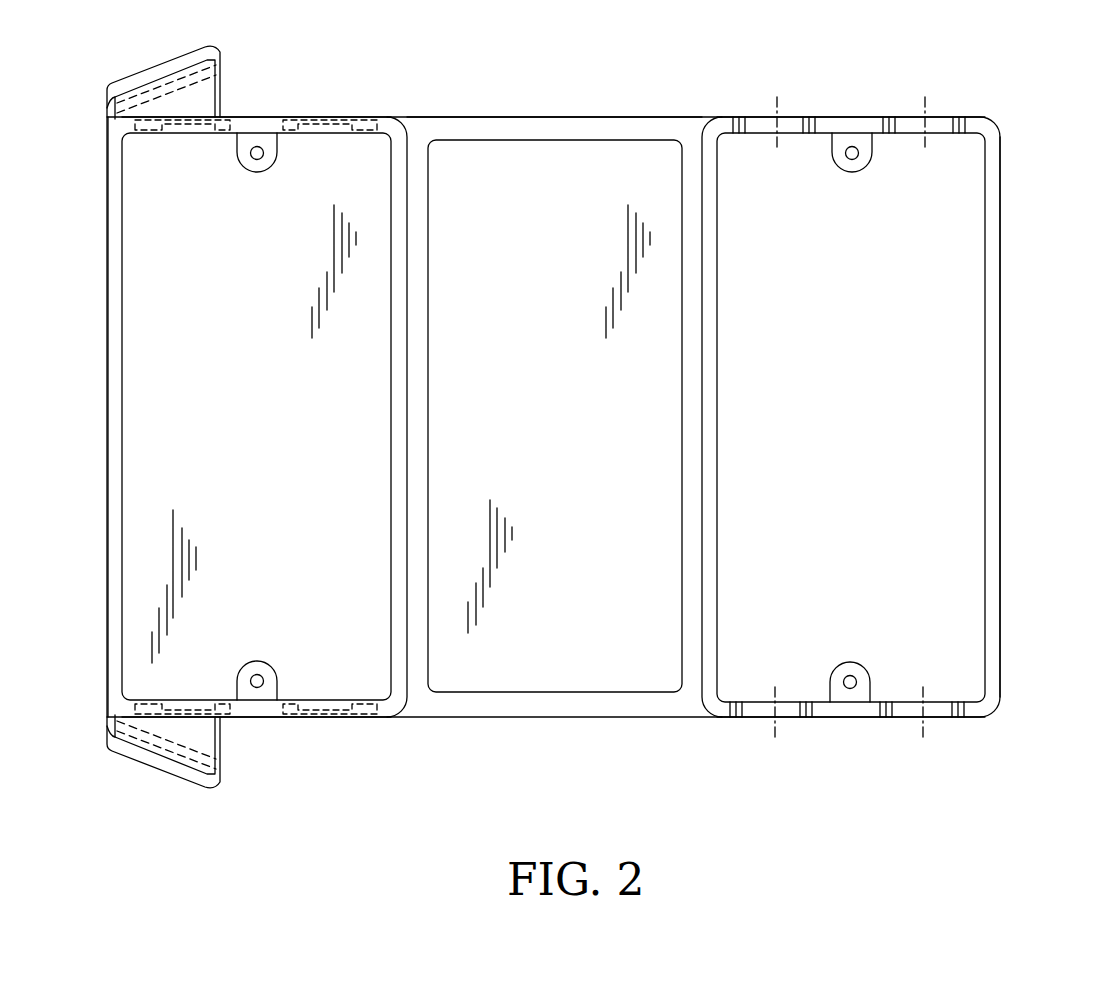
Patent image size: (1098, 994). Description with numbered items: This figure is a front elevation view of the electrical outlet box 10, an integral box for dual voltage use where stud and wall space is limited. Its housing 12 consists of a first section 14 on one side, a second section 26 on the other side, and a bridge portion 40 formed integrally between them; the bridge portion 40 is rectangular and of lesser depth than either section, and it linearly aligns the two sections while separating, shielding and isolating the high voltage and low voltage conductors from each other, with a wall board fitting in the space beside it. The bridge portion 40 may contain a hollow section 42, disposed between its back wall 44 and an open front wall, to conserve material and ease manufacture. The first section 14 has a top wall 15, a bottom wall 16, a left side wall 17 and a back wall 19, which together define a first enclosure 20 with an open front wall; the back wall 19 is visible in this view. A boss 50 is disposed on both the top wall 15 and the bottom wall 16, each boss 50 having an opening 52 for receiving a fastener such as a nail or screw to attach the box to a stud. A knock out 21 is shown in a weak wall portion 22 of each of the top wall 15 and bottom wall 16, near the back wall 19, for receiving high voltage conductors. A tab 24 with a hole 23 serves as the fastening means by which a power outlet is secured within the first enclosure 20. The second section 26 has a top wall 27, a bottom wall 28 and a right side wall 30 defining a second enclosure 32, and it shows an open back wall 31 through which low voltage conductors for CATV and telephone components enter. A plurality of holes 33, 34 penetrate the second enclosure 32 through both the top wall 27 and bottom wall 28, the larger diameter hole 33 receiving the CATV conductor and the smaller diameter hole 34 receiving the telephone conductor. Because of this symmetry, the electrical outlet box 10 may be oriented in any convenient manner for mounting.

The electrical outlet box 10 is at (538, 80).
The housing 12 is at (625, 108).
The first section 14 is at (107, 238).
The top wall 15 is at (283, 117).
The bottom wall 16 is at (283, 717).
The left side wall 17 is at (107, 440).
The back wall 19 is at (174, 343).
The first enclosure 20 is at (155, 513).
The knock out 21 is at (197, 122).
The weak wall portion 22 is at (362, 125).
The hole 23 is at (254, 158).
The tab 24 is at (268, 165).
The second section 26 is at (1000, 468).
The top wall 27 is at (855, 112).
The bottom wall 28 is at (858, 720).
The right side wall 30 is at (1000, 387).
The open back wall 31 is at (940, 262).
The second enclosure 32 is at (915, 356).
The larger diameter hole 33 is at (925, 105).
The smaller diameter hole 34 is at (812, 117).
The bridge portion 40 is at (498, 117).
The hollow section 42 is at (585, 642).
The back wall 44 is at (512, 653).
The boss 50 is at (205, 64).
The opening 52 is at (108, 104).